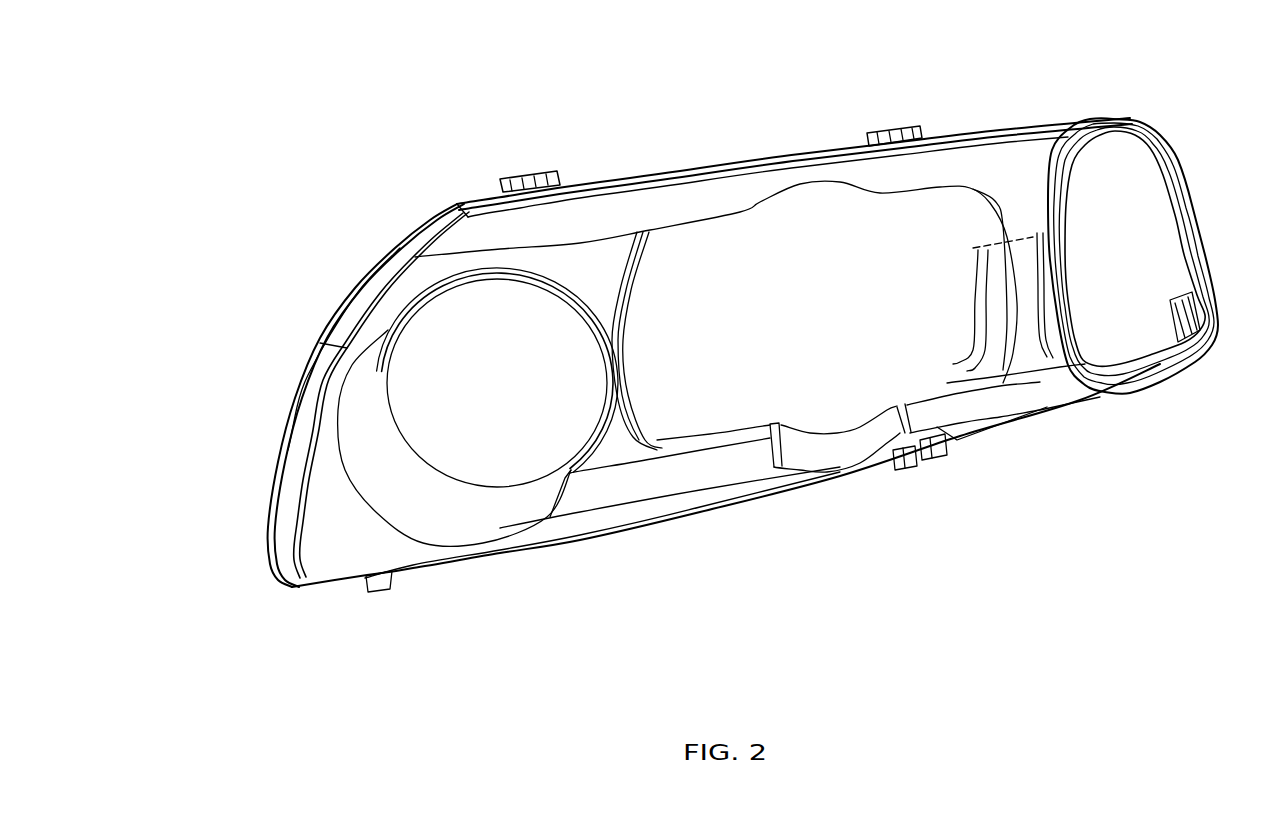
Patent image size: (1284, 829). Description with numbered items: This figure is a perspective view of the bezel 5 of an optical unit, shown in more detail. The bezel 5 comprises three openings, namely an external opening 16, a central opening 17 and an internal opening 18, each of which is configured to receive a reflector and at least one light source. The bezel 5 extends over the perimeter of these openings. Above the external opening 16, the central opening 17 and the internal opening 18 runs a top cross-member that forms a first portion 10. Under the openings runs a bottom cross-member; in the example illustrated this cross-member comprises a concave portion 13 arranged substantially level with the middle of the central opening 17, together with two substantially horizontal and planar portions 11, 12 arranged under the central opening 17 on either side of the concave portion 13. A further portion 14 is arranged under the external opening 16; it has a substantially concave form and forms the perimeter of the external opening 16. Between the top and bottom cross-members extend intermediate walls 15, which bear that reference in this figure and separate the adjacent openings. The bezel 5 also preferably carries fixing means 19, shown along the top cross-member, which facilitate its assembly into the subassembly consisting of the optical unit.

The bezel 5 is at (217, 532).
The first portion 10 is at (657, 207).
The portion 11 is at (703, 463).
The portion 12 is at (947, 462).
The concave portion 13 is at (853, 452).
The portion 14 is at (423, 517).
The intermediate walls 15 is at (590, 283).
The external opening 16 is at (512, 410).
The central opening 17 is at (767, 337).
The internal opening 18 is at (1110, 270).
The fixing means 19 is at (513, 177).